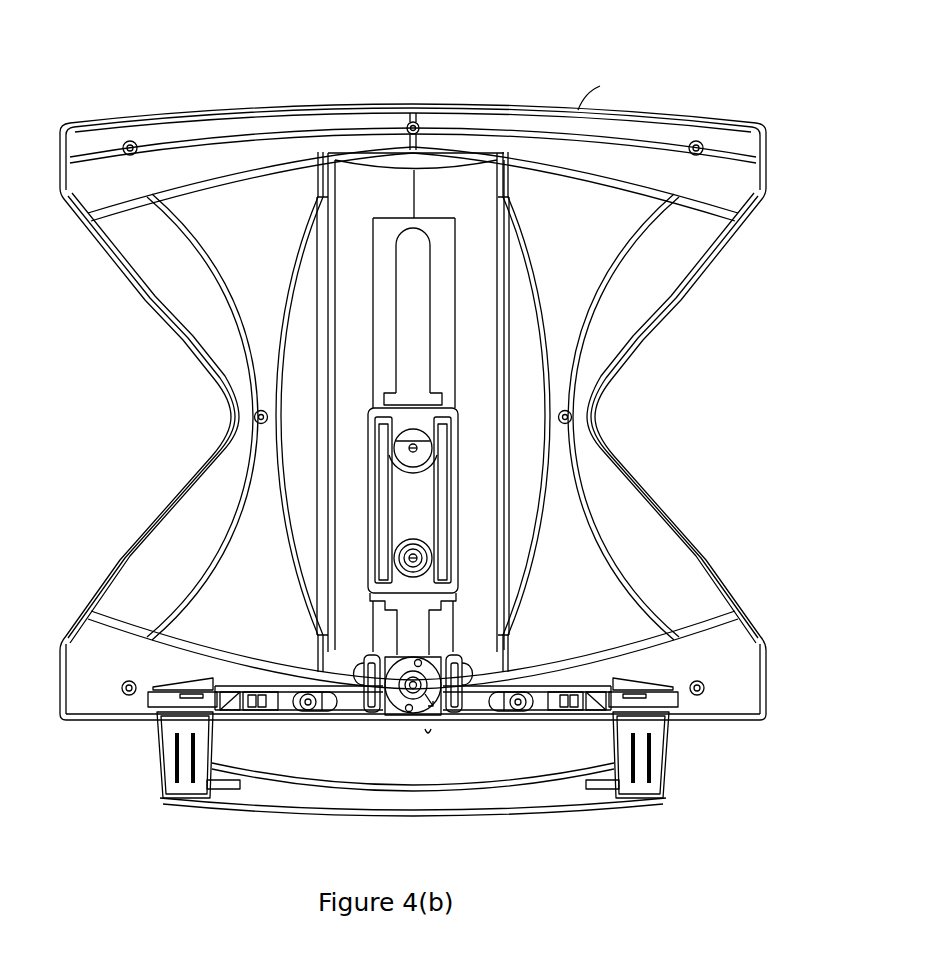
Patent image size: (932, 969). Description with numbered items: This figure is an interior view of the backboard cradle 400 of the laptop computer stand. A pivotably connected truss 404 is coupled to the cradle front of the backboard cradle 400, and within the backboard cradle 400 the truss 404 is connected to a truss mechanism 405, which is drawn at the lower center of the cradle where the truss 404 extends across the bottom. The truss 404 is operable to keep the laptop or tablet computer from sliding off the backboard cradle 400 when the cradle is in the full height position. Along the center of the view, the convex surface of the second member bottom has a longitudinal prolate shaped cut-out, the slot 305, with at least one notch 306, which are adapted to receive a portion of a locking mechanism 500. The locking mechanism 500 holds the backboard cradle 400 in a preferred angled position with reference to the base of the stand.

The backboard cradle 400 is at (804, 175).
The slot 305 is at (413, 262).
The notch 306 is at (443, 398).
The locking mechanism 500 is at (425, 507).
The truss mechanism 405 is at (374, 712).
The truss 404 is at (641, 803).